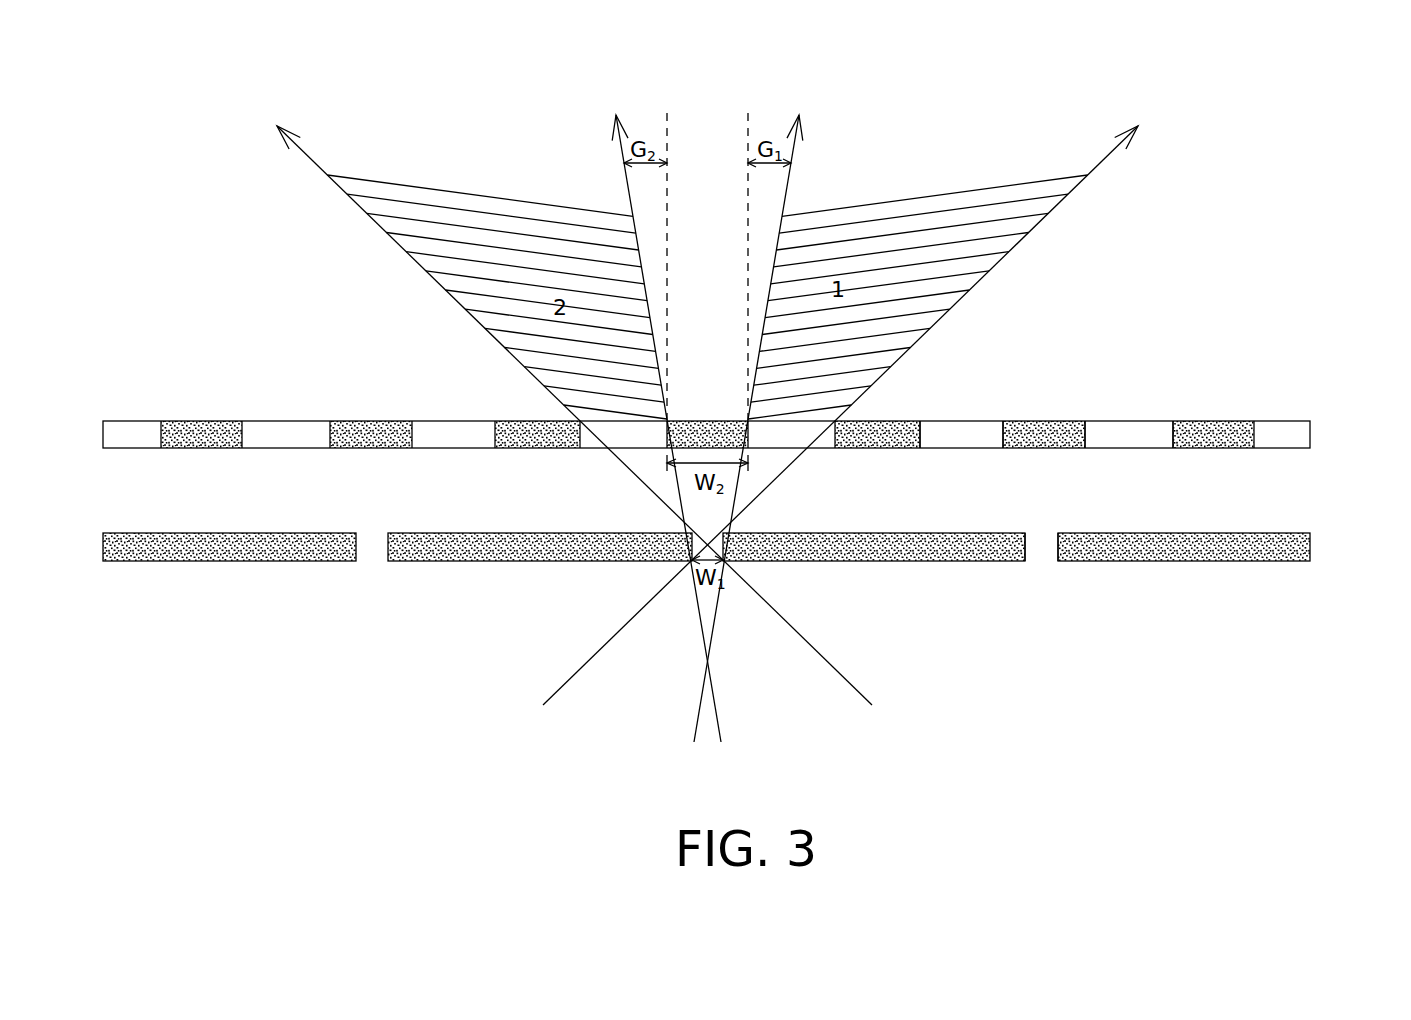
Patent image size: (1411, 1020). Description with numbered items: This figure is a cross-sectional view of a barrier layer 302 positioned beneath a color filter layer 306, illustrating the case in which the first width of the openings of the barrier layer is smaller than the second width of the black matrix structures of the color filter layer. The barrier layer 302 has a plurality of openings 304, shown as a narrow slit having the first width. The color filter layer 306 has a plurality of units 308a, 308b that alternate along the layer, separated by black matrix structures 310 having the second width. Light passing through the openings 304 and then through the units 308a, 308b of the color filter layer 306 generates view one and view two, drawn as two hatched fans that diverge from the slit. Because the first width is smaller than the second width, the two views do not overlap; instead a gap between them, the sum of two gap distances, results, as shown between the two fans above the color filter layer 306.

The barrier layer 302 is at (1312, 554).
The openings 304 is at (1046, 556).
The color filter layer 306 is at (1312, 436).
The unit 308a is at (1107, 421).
The unit 308b is at (950, 421).
The black matrix structure 310 is at (1213, 421).